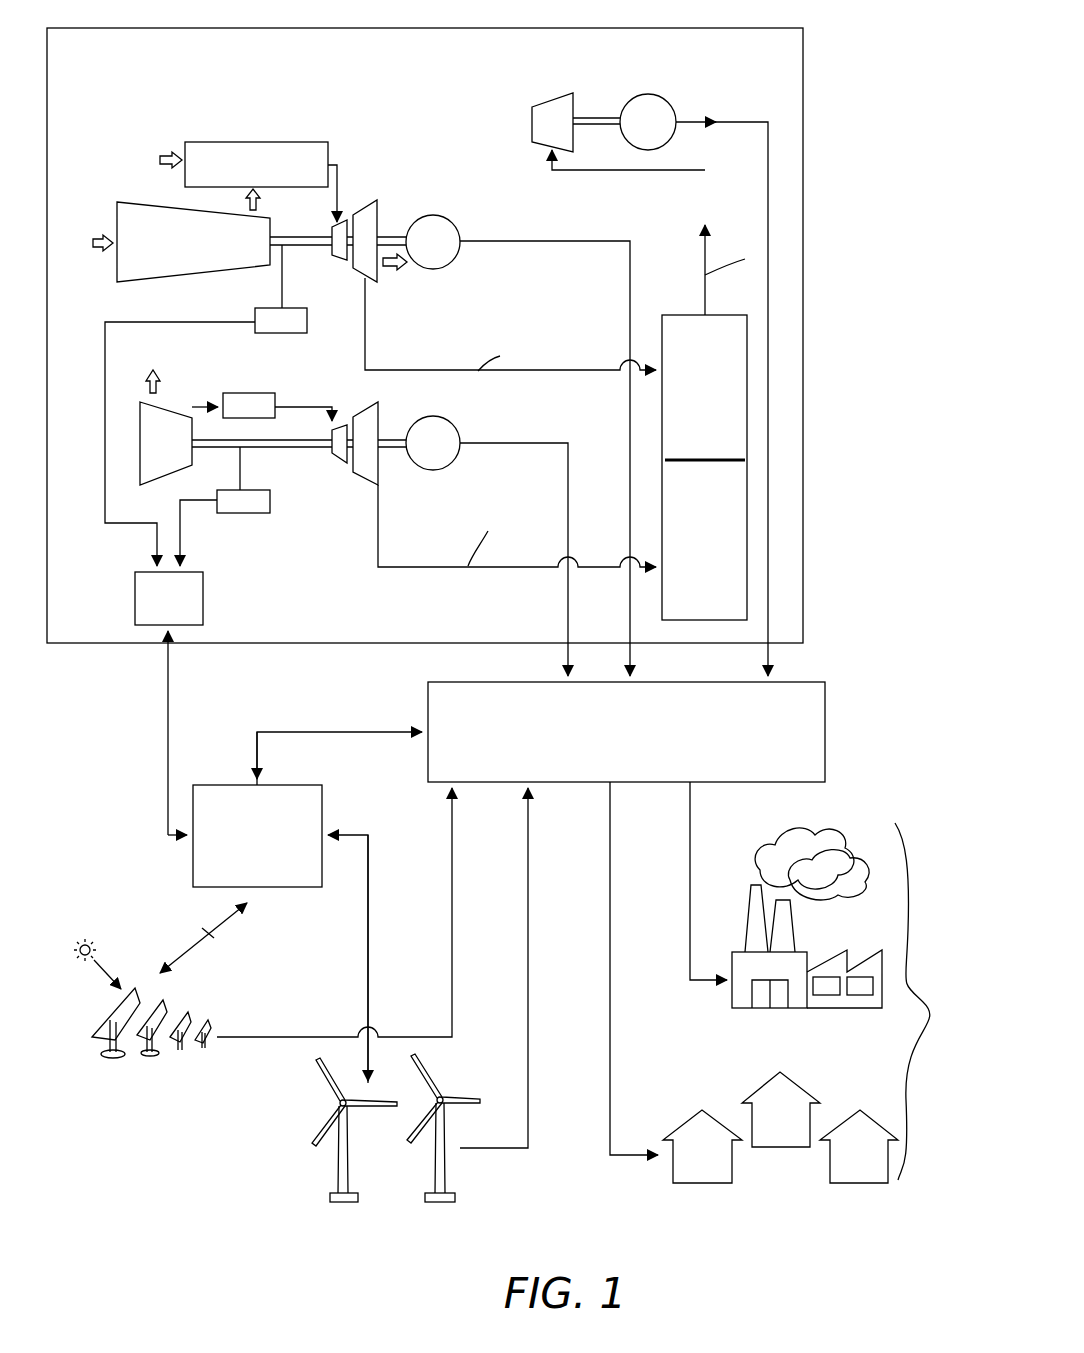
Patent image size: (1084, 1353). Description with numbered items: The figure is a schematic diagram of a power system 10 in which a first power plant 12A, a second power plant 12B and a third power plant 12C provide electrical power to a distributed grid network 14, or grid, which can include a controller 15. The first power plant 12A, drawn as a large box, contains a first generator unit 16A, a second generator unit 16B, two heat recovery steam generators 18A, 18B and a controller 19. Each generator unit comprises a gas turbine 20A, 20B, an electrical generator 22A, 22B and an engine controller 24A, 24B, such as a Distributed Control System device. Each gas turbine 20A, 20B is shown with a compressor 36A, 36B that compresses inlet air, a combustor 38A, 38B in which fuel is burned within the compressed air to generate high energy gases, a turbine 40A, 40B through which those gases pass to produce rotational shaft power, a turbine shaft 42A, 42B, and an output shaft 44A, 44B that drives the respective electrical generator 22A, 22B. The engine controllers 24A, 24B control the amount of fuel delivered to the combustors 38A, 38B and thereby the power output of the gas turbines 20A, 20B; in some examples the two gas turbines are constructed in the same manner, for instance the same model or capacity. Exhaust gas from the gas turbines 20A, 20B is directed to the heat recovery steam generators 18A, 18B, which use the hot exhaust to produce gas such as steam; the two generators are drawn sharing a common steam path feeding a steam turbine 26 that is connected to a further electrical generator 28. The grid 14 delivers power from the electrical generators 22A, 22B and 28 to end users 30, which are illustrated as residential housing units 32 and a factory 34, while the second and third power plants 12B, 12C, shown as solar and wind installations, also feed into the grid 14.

The power system 10 is at (856, 26).
The first power plant 12A is at (803, 108).
The power plant 12B is at (210, 1003).
The power plant 12C is at (320, 1172).
The distributed grid network 14 is at (825, 725).
The controller 15 is at (322, 805).
The first generator unit 16A is at (400, 105).
The second generator unit 16B is at (470, 465).
The heat recovery steam generator 18A is at (747, 370).
The heat recovery steam generator 18B is at (747, 530).
The controller 19 is at (203, 597).
The gas turbine 20A is at (234, 283).
The gas turbine 20B is at (331, 489).
The electrical generator 22A is at (455, 222).
The electrical generator 22B is at (452, 421).
The engine controller 24A is at (283, 334).
The engine controller 24B is at (242, 513).
The steam turbine 26 is at (553, 103).
The electrical generator 28 is at (650, 95).
The end users 30 is at (927, 1001).
The residential housing units 32 is at (770, 1195).
The factory 34 is at (732, 1008).
The compressor 36A is at (118, 201).
The compressor 36B is at (192, 465).
The combustor 38A is at (300, 142).
The combustor 38B is at (262, 418).
The turbine 40A is at (338, 258).
The turbine 40B is at (342, 423).
The turbine shaft 42A is at (312, 233).
The turbine shaft 42B is at (205, 450).
The output shaft 44A is at (388, 235).
The output shaft 44B is at (387, 440).